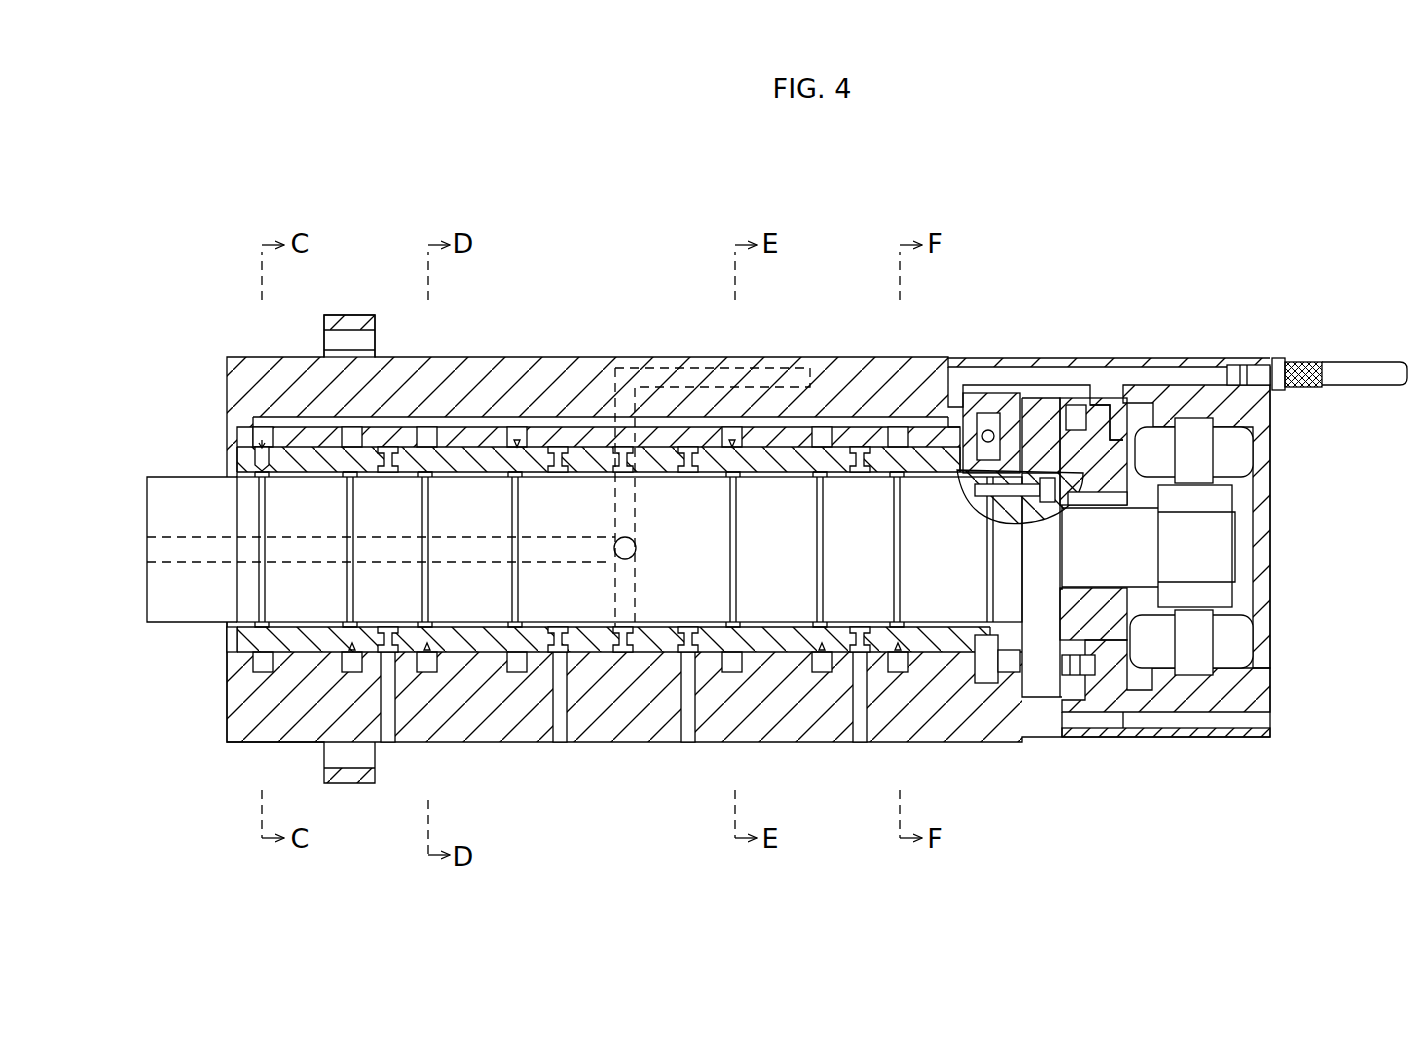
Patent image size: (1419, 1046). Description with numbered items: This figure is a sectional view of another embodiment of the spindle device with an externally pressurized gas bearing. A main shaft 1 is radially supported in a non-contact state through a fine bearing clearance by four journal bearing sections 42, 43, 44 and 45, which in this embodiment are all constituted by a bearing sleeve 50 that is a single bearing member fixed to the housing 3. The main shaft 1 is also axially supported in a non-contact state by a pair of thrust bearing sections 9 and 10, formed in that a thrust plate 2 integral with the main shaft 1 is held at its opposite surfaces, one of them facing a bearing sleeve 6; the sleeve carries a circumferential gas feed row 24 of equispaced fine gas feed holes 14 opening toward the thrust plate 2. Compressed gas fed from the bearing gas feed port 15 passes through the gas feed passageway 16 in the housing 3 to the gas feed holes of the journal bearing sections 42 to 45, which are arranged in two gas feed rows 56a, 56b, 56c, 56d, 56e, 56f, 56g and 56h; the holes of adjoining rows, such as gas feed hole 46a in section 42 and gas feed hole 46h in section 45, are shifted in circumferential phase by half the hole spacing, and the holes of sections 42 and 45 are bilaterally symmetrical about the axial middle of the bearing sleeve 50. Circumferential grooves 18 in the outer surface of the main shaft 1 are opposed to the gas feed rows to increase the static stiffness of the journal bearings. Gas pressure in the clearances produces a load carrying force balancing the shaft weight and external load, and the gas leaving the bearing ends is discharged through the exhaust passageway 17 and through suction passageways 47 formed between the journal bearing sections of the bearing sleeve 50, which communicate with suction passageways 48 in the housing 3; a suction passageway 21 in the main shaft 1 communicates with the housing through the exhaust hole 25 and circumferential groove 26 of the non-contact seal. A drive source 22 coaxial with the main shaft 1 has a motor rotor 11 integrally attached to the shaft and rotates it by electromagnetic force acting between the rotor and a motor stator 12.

The main shaft 1 is at (150, 508).
The thrust plate 2 is at (1040, 690).
The housing 3 is at (355, 350).
The bearing sleeve 6 is at (1112, 450).
The thrust bearing section 9 is at (1000, 440).
The thrust bearing section 10 is at (1075, 415).
The motor rotor 11 is at (1215, 496).
The motor stator 12 is at (1195, 430).
The gas feed holes 14 is at (992, 410).
The bearing gas feed port 15 is at (1296, 362).
The gas feed passageway 16 is at (597, 417).
The exhaust passageway 17 is at (672, 725).
The circumferential grooves 18 is at (357, 508).
The suction passageway 21 is at (192, 555).
The drive source 22 is at (1242, 595).
The gas feed row 24 is at (990, 680).
The exhaust hole 25 is at (612, 630).
The circumferential groove 26 is at (553, 455).
The journal bearing section 42 is at (305, 470).
The journal bearing section 43 is at (465, 470).
The journal bearing section 44 is at (767, 460).
The journal bearing section 45 is at (945, 435).
The gas feed hole 46a is at (250, 470).
The gas feed hole 46h is at (968, 480).
The suction passageways 47 is at (390, 660).
The suction passageways 48 is at (388, 627).
The bearing sleeve 50 is at (235, 635).
The gas feed row 56a is at (262, 655).
The gas feed row 56b is at (352, 655).
The gas feed row 56c is at (430, 655).
The gas feed row 56d is at (517, 440).
The gas feed row 56e is at (732, 440).
The gas feed row 56f is at (822, 660).
The gas feed row 56g is at (898, 660).
The gas feed row 56h is at (988, 660).